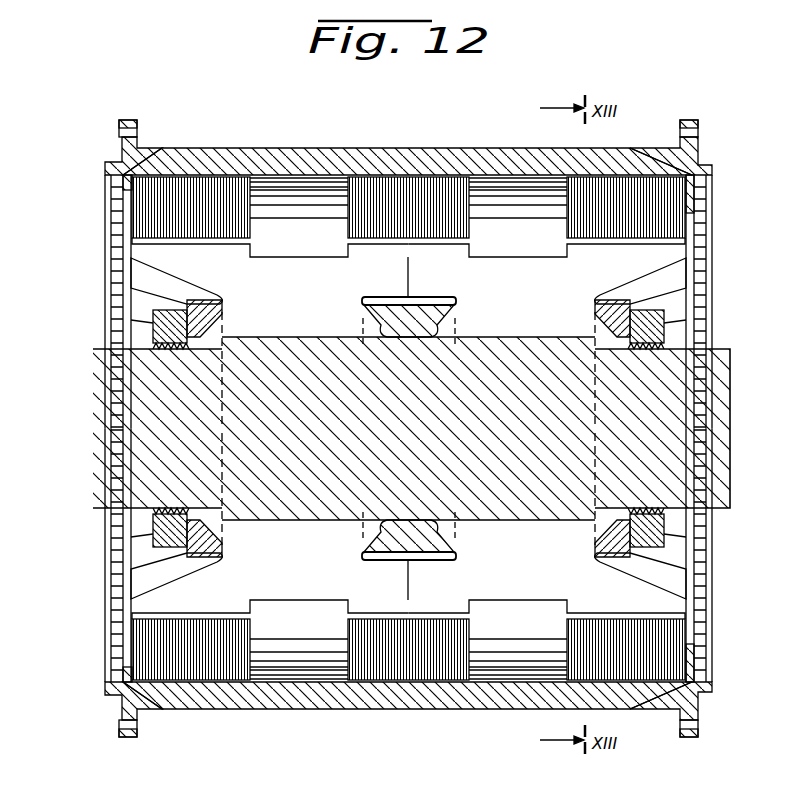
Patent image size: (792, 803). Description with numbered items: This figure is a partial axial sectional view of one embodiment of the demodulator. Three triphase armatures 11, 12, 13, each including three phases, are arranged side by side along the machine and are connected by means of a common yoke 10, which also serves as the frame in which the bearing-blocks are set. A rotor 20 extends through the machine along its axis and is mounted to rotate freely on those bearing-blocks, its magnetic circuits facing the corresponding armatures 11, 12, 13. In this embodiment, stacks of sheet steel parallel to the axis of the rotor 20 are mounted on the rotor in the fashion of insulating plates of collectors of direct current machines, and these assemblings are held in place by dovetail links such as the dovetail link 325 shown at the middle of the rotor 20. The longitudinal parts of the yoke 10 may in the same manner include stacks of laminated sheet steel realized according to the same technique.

The yoke 10 is at (353, 148).
The triphase armature 11 is at (177, 190).
The triphase armature 12 is at (397, 195).
The triphase armature 13 is at (642, 195).
The rotor 20 is at (687, 425).
The dovetail link 325 is at (418, 298).